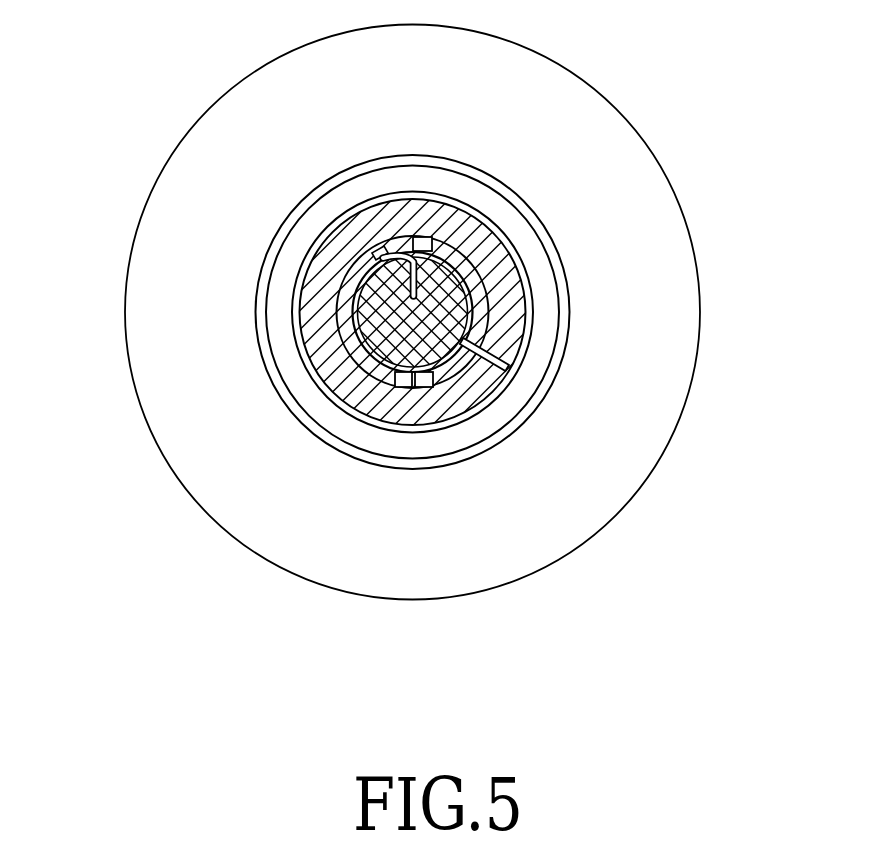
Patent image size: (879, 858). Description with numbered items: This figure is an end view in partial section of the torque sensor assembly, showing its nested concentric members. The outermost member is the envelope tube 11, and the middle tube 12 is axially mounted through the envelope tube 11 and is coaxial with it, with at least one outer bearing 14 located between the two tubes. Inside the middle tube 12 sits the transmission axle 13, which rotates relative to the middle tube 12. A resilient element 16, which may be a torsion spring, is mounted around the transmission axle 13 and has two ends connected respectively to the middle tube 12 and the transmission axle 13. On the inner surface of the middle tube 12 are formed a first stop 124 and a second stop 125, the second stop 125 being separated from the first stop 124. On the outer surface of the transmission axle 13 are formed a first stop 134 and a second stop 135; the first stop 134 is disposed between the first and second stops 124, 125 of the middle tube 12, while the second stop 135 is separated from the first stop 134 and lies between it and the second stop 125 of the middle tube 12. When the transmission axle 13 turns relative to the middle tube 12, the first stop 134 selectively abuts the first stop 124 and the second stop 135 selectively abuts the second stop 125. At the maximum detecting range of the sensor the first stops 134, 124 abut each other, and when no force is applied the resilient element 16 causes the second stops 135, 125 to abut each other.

The envelope tube 11 is at (568, 88).
The middle tube 12 is at (395, 212).
The transmission axle 13 is at (383, 332).
The outer bearing 14 is at (538, 257).
The resilient element 16 is at (472, 310).
The first stop of the middle tube 124 is at (421, 237).
The second stop of the middle tube 125 is at (428, 387).
The first stop of the transmission axle 134 is at (377, 253).
The second stop of the transmission axle 135 is at (405, 386).